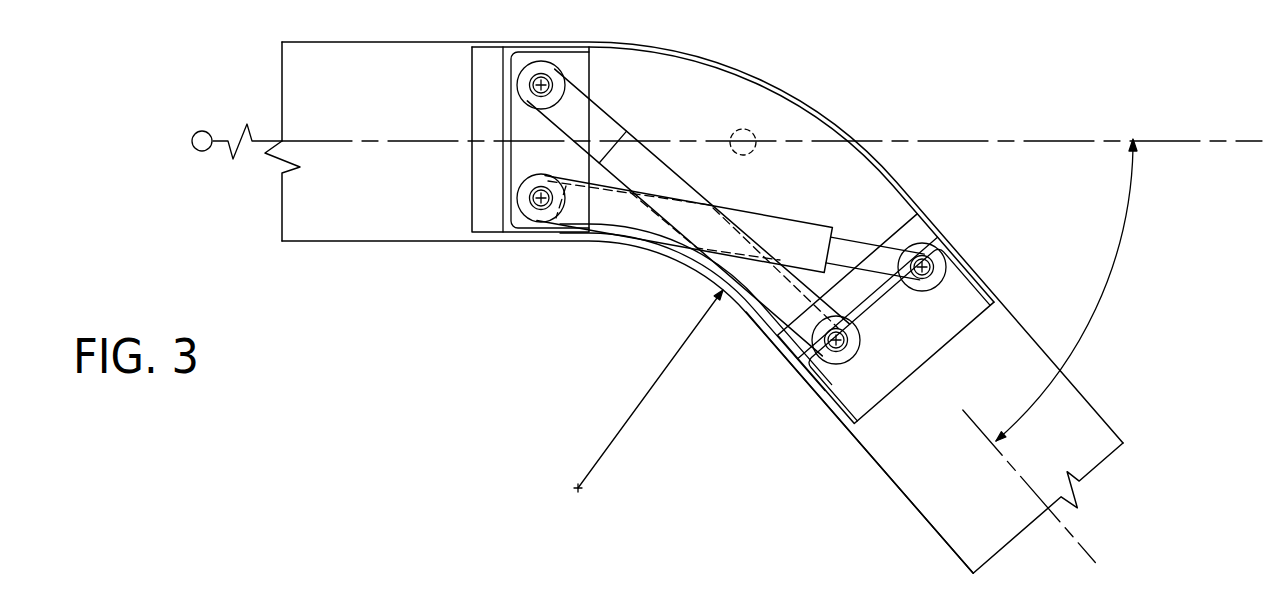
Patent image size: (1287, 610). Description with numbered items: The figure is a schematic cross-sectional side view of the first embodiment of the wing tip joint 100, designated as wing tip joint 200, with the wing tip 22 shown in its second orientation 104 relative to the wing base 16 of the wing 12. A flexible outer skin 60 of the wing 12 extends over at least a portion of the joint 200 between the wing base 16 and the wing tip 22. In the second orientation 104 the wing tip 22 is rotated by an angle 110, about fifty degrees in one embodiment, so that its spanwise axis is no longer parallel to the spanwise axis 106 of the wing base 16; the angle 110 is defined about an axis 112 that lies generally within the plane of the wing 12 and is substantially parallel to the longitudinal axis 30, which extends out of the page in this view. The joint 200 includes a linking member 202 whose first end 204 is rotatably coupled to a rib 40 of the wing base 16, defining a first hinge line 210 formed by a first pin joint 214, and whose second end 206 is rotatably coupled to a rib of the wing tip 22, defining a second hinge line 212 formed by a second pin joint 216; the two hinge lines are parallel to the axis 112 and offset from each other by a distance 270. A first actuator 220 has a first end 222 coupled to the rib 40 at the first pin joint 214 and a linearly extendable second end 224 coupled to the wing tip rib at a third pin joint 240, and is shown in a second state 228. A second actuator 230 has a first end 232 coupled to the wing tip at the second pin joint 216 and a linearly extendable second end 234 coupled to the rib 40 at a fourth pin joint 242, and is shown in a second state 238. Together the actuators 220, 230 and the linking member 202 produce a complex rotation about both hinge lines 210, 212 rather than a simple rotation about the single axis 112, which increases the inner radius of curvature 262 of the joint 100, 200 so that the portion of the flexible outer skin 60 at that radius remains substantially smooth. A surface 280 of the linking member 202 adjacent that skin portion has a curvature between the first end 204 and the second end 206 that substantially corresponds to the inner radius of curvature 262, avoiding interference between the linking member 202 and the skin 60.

The wing 12 is at (706, 155).
The wing base 16 is at (382, 41).
The wing tip 22 is at (1018, 320).
The longitudinal axis 30 is at (203, 131).
The rib 40 is at (590, 75).
The flexible outer skin 60 is at (833, 121).
The wing tip joint 100 is at (471, 393).
The second orientation 104 is at (999, 393).
The spanwise axis of wing base 106 is at (408, 138).
The angle 110 is at (1130, 193).
The axis 112 is at (743, 128).
The wing tip joint 200 is at (537, 374).
The linking member 202 is at (577, 178).
The linking member first end 204 is at (598, 0).
The linking member second end 206 is at (832, 375).
The first hinge line 210 is at (467, 245).
The second hinge line 212 is at (758, 386).
The first pin joint 214 is at (535, 208).
The second pin joint 216 is at (836, 352).
The first actuator 220 is at (773, 217).
The first actuator first end 222 is at (548, 227).
The first actuator second end 224 is at (935, 243).
The second state of first actuator 228 is at (887, 225).
The second actuator 230 is at (703, 197).
The second actuator first end 232 is at (808, 360).
The second actuator second end 234 is at (550, 55).
The second state of second actuator 238 is at (627, 107).
The third pin joint 240 is at (931, 260).
The fourth pin joint 242 is at (530, 77).
The inner radius of curvature 262 is at (637, 407).
The distance 270 is at (785, 0).
The surface 280 is at (623, 240).